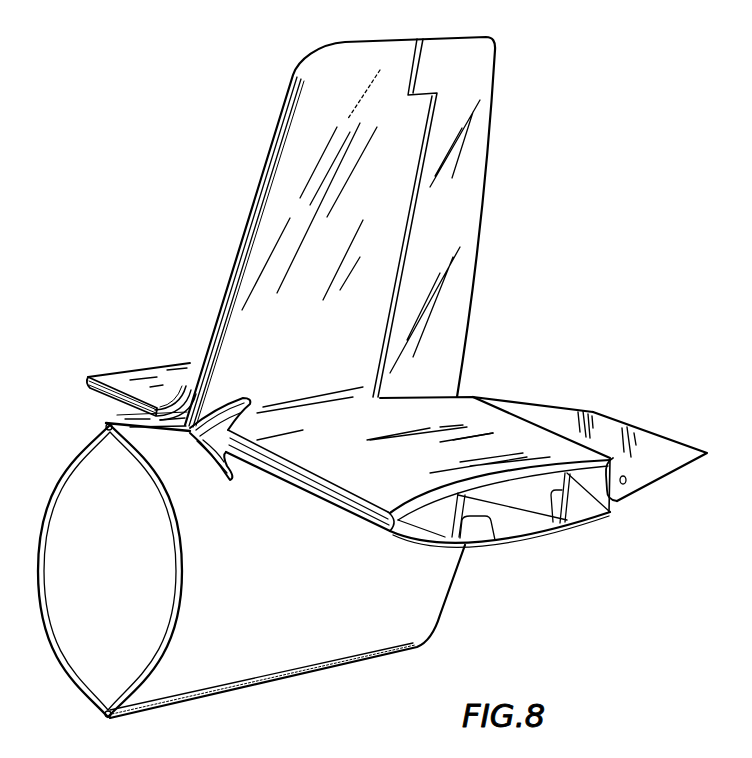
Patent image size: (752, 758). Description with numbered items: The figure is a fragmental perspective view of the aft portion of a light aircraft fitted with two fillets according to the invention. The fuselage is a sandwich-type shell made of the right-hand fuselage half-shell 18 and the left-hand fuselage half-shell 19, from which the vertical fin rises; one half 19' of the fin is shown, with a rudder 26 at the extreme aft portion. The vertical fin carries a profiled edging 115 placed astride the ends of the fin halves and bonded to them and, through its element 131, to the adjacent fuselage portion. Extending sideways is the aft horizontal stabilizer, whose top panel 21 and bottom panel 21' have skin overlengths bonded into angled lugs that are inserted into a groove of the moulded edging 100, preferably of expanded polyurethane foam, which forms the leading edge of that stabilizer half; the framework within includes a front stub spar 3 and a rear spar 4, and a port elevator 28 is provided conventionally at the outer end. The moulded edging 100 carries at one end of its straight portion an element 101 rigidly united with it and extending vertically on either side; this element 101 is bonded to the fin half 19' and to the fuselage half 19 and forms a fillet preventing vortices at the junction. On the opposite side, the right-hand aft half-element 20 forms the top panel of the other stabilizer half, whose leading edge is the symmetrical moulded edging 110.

The left-hand fuselage half-shell 19 is at (271, 565).
The right-hand fuselage half-shell 18 is at (67, 465).
The half of the vertical stabilizer 19' is at (340, 231).
The profiled edging for the vertical fin 115 is at (247, 217).
The rudder 26 is at (443, 327).
The right-hand aft half-element 20 is at (143, 380).
The moulded edging 110 is at (83, 395).
The element of profiled edging 131 is at (163, 412).
The fillet element 101 is at (215, 420).
The moulded edging 100 is at (280, 485).
The top panel 21 is at (433, 462).
The bottom panel 21' is at (500, 527).
The front stub spar 3 is at (492, 535).
The rear spar 4 is at (555, 523).
The port elevator 28 is at (610, 433).